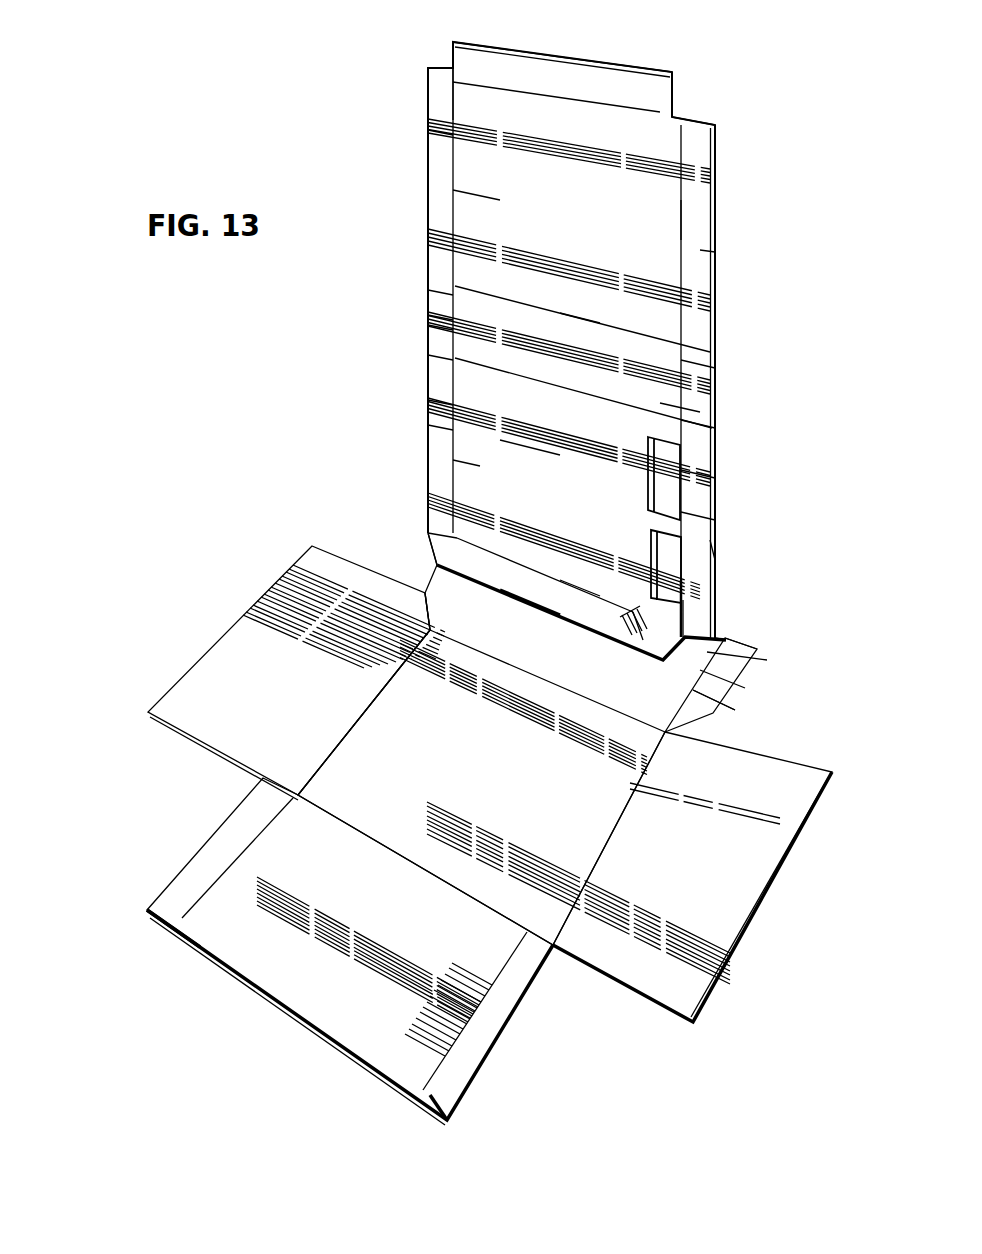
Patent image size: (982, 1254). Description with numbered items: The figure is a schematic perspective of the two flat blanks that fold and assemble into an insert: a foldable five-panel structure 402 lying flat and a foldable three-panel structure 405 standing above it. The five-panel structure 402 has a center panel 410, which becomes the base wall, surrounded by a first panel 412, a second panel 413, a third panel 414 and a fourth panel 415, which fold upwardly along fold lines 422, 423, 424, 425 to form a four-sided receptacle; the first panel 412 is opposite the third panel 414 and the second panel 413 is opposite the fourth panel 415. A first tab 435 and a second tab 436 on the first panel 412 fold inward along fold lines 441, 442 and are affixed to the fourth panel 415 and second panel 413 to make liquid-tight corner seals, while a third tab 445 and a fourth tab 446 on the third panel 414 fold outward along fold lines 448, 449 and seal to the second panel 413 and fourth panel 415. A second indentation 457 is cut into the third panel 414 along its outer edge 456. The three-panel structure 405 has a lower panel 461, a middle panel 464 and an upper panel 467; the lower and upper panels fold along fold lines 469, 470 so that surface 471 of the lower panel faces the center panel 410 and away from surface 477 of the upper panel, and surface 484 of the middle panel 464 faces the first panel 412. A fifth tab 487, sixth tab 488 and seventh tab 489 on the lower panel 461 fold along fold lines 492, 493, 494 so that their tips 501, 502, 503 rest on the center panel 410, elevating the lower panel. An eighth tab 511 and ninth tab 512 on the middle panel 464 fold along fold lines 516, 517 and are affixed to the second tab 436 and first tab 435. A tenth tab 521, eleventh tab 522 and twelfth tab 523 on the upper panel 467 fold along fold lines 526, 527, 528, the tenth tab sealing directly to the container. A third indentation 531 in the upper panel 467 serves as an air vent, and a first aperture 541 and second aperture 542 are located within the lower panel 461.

The foldable five-panel structure 402 is at (146, 847).
The foldable three-panel structure 405 is at (641, 53).
The center panel 410 is at (557, 947).
The first panel 412 is at (303, 997).
The second panel 413 is at (775, 877).
The third panel 414 is at (703, 657).
The fourth panel 415 is at (187, 683).
The fold line 422 is at (378, 843).
The fold line 423 is at (630, 783).
The fold line 424 is at (648, 722).
The fold line 425 is at (315, 763).
The first tab 435 is at (177, 897).
The second tab 436 is at (467, 1070).
The fold line 441 is at (243, 835).
The fold line 442 is at (490, 990).
The third tab 445 is at (708, 705).
The fourth tab 446 is at (432, 600).
The fold line 448 is at (717, 683).
The fold line 449 is at (440, 607).
The outer edge 456 is at (723, 625).
The second indentation 457 is at (745, 637).
The lower panel 461 is at (467, 462).
The middle panel 464 is at (430, 330).
The upper panel 467 is at (470, 202).
The fold line 469 is at (540, 385).
The fold line 470 is at (583, 318).
The surface 471 is at (467, 380).
The surface 477 is at (670, 290).
The surface 484 is at (697, 425).
The fifth tab 487 is at (580, 613).
The sixth tab 488 is at (715, 540).
The seventh tab 489 is at (442, 428).
The fold line 492 is at (623, 640).
The fold line 493 is at (700, 515).
The fold line 494 is at (427, 403).
The tip 501 is at (527, 605).
The tip 502 is at (697, 470).
The tip 503 is at (430, 358).
The eighth tab 511 is at (667, 405).
The ninth tab 512 is at (427, 318).
The fold line 516 is at (682, 365).
The fold line 517 is at (445, 295).
The tenth tab 521 is at (580, 78).
The eleventh tab 522 is at (700, 257).
The twelfth tab 523 is at (437, 147).
The fold line 526 is at (500, 80).
The fold line 527 is at (682, 220).
The fold line 528 is at (450, 102).
The third indentation 531 is at (697, 112).
The first aperture 541 is at (667, 487).
The second aperture 542 is at (667, 558).